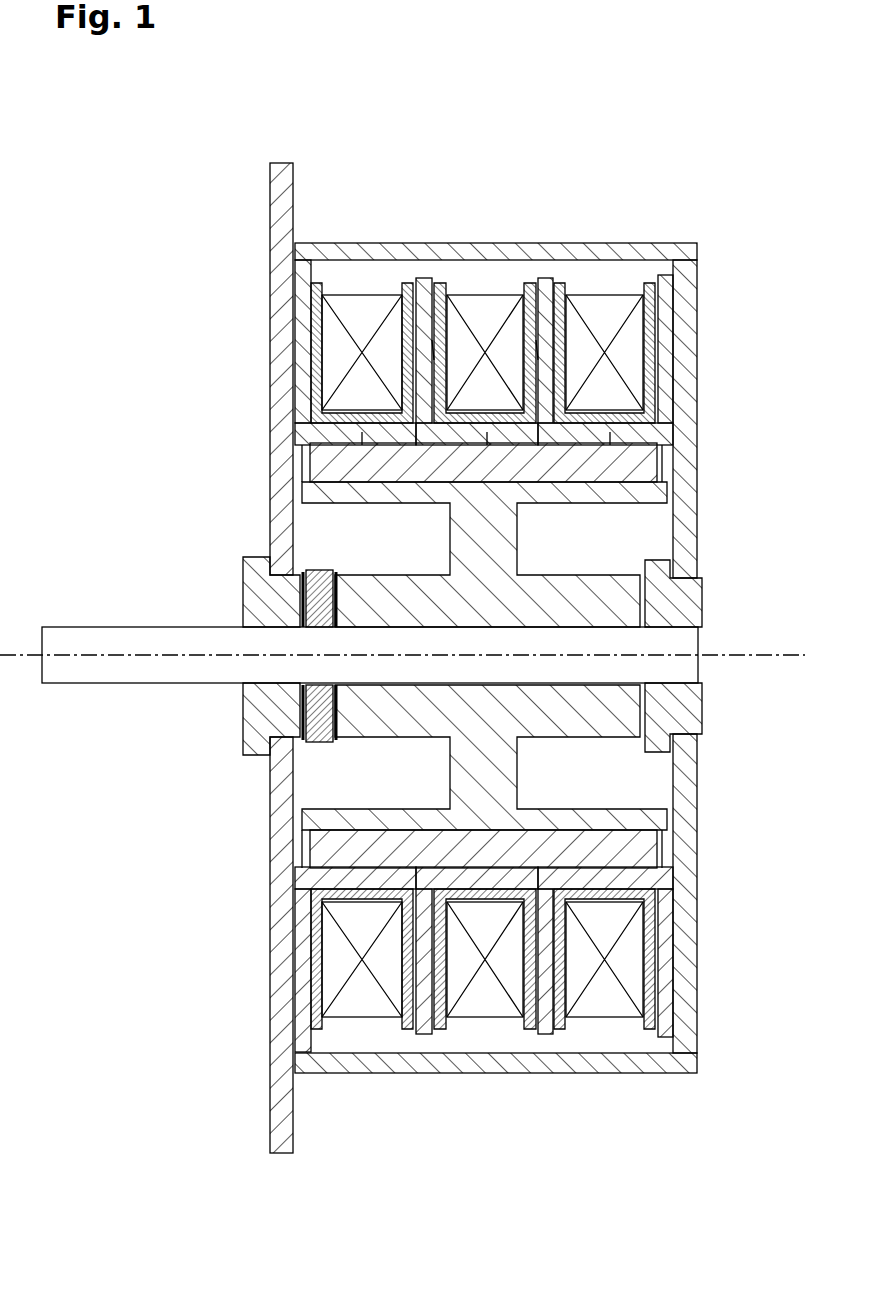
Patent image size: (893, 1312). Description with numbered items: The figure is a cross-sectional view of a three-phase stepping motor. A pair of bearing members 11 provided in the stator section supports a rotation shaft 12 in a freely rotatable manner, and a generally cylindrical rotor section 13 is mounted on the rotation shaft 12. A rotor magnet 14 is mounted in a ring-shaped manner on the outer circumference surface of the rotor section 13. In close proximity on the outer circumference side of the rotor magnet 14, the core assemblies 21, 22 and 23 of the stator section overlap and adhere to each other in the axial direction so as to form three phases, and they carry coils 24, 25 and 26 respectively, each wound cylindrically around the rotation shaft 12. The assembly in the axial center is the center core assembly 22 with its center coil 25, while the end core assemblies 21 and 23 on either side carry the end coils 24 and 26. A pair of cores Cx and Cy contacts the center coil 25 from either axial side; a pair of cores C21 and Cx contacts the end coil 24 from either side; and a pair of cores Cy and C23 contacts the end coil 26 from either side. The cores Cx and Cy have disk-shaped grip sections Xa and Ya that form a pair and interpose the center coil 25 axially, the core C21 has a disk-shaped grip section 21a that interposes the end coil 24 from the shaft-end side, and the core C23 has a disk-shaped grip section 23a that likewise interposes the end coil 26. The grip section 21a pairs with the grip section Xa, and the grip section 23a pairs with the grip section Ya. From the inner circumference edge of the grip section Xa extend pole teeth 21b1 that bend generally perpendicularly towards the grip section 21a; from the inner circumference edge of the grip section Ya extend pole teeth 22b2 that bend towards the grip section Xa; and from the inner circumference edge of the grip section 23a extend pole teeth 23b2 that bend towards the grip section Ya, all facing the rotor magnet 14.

The bearing members 11 is at (248, 558).
The rotation shaft 12 is at (107, 642).
The rotor section 13 is at (581, 545).
The rotor magnet 14 is at (655, 468).
The end core assembly 21 is at (347, 1098).
The center core assembly 22 is at (474, 1094).
The end core assembly 23 is at (612, 1091).
The end coil 24 is at (363, 320).
The center coil 25 is at (498, 312).
The end coil 26 is at (603, 305).
The core C21 is at (303, 280).
The core C23 is at (668, 286).
The core Cx is at (424, 292).
The core Cy is at (548, 262).
The grip section 21a is at (285, 341).
The grip section 23a is at (665, 346).
The pole teeth 21b1 is at (362, 432).
The pole teeth 22b2 is at (487, 440).
The pole teeth 23b2 is at (610, 432).
The grip section Xa is at (430, 352).
The grip section Ya is at (545, 350).